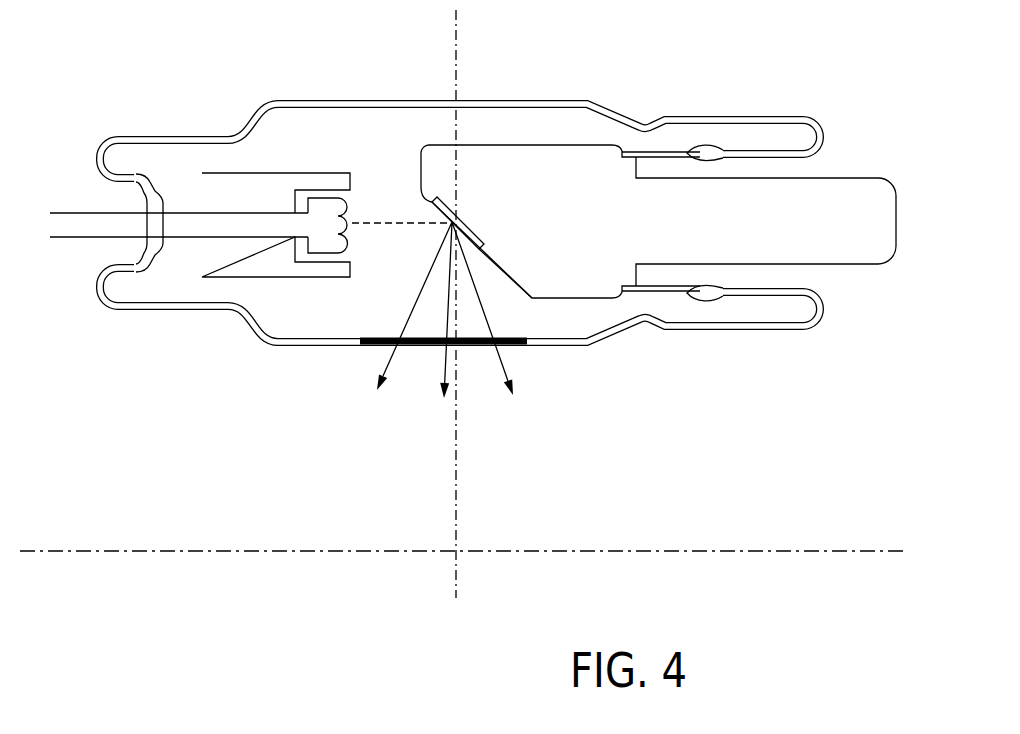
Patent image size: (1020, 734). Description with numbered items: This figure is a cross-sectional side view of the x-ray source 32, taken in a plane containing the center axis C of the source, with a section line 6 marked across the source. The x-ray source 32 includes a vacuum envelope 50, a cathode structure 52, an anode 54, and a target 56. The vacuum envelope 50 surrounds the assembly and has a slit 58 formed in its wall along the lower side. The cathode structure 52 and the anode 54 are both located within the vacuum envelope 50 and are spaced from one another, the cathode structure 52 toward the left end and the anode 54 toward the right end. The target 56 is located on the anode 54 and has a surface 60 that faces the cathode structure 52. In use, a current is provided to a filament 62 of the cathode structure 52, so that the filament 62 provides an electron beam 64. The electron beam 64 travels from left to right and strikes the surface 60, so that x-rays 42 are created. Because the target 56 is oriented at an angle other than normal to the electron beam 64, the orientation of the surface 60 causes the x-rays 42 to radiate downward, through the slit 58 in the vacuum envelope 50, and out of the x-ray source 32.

The x-ray source 32 is at (210, 64).
The x-rays 42 is at (461, 313).
The vacuum envelope 50 is at (541, 100).
The cathode structure 52 is at (252, 182).
The anode 54 is at (542, 162).
The target 56 is at (472, 240).
The slit 58 is at (525, 346).
The surface 60 is at (436, 204).
The filament 62 is at (346, 240).
The electron beam 64 is at (397, 227).
The section line 6- 6 is at (440, 22).
The central axis C is at (818, 550).